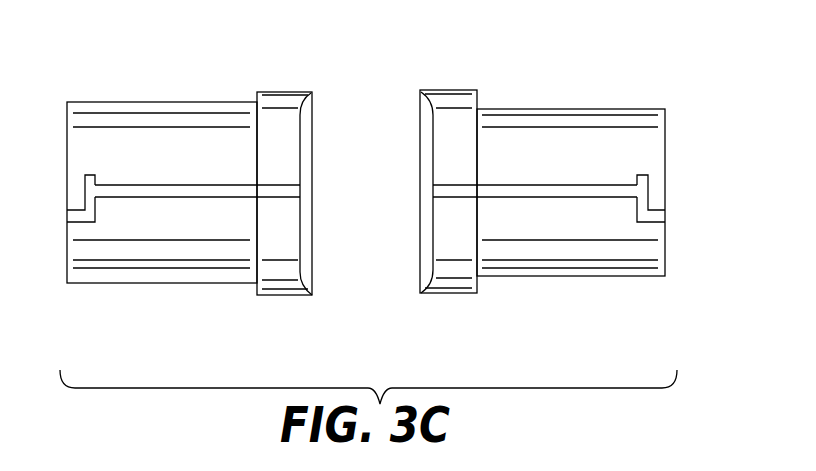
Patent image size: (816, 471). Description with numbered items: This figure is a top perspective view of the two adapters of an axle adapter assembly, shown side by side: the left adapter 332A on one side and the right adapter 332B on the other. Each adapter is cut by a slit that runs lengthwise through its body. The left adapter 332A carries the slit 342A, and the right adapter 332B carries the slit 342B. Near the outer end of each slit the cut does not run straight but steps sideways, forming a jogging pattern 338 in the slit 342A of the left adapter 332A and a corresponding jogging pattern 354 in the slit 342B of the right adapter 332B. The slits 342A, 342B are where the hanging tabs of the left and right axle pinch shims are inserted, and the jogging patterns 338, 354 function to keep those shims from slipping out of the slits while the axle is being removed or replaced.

The left adapter 332A is at (172, 101).
The right adapter 332B is at (535, 109).
The jogging pattern 338 is at (95, 171).
The jogging pattern 354 is at (660, 175).
The slit 342A is at (180, 198).
The slit 342B is at (583, 198).